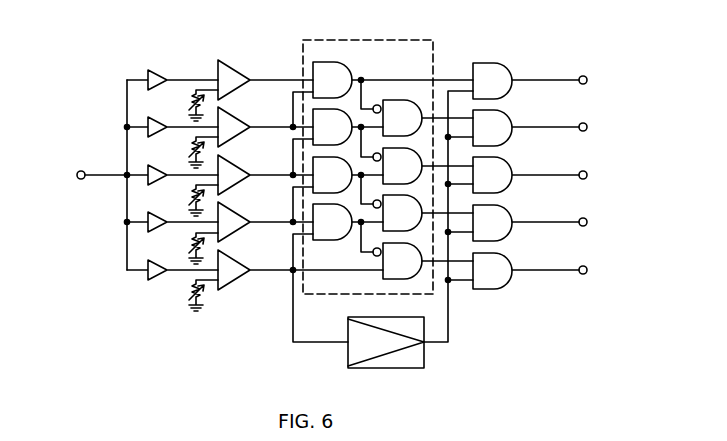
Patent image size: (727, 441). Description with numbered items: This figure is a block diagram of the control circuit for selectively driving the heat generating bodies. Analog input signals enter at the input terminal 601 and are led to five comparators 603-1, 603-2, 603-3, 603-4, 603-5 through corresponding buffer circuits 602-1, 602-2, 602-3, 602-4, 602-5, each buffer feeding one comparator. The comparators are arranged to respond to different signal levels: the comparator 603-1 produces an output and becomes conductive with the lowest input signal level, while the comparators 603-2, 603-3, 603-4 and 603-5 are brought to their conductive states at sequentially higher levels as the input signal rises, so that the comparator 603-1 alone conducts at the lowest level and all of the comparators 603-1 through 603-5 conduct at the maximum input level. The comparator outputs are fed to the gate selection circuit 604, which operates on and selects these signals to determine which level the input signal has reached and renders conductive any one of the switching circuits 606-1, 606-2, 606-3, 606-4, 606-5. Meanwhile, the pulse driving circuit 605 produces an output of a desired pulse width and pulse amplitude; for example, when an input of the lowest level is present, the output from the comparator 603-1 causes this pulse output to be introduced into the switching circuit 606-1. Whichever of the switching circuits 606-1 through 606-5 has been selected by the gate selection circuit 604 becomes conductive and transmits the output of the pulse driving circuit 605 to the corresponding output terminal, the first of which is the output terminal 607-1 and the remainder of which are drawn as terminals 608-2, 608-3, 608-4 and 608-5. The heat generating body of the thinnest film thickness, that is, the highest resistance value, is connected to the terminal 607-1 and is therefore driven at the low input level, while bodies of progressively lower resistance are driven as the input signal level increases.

The input terminal 601 is at (76, 174).
The buffer circuit 602-1 is at (151, 280).
The buffer circuit 602-2 is at (151, 213).
The buffer circuit 602-3 is at (151, 166).
The buffer circuit 602-4 is at (151, 118).
The buffer circuit 602-5 is at (157, 58).
The comparator 603-1 is at (232, 288).
The comparator 603-2 is at (252, 208).
The comparator 603-3 is at (224, 167).
The comparator 603-4 is at (224, 119).
The comparator 603-5 is at (221, 62).
The gate selection circuit 604 is at (368, 39).
The pulse driving circuit 605 is at (425, 356).
The switching circuit 606-1 is at (477, 254).
The switching circuit 606-2 is at (477, 206).
The switching circuit 606-3 is at (477, 159).
The switching circuit 606-4 is at (477, 112).
The switching circuit 606-5 is at (477, 65).
The output terminal 607-1 is at (586, 273).
The output terminal 608-2 is at (586, 225).
The output terminal 608-3 is at (586, 178).
The output terminal 608-4 is at (586, 130).
The output terminal 608-5 is at (586, 83).